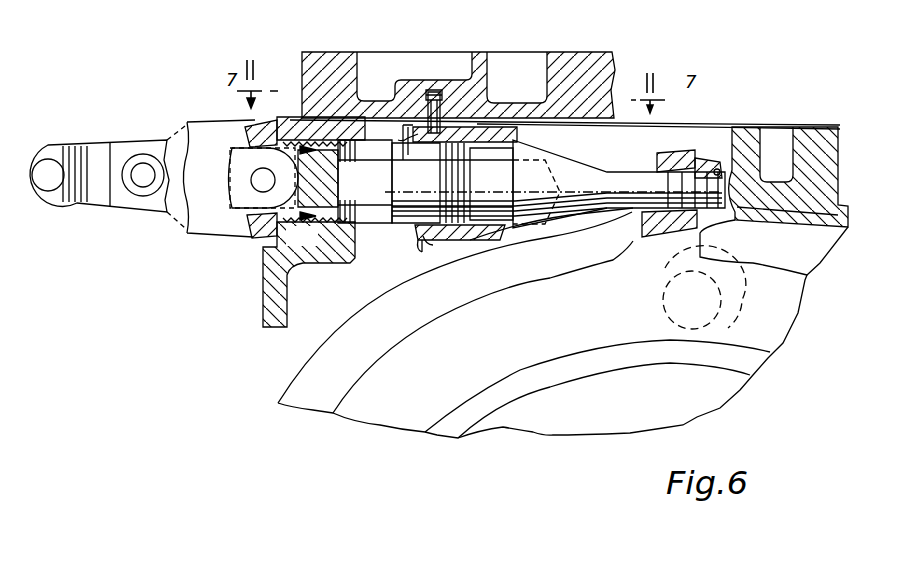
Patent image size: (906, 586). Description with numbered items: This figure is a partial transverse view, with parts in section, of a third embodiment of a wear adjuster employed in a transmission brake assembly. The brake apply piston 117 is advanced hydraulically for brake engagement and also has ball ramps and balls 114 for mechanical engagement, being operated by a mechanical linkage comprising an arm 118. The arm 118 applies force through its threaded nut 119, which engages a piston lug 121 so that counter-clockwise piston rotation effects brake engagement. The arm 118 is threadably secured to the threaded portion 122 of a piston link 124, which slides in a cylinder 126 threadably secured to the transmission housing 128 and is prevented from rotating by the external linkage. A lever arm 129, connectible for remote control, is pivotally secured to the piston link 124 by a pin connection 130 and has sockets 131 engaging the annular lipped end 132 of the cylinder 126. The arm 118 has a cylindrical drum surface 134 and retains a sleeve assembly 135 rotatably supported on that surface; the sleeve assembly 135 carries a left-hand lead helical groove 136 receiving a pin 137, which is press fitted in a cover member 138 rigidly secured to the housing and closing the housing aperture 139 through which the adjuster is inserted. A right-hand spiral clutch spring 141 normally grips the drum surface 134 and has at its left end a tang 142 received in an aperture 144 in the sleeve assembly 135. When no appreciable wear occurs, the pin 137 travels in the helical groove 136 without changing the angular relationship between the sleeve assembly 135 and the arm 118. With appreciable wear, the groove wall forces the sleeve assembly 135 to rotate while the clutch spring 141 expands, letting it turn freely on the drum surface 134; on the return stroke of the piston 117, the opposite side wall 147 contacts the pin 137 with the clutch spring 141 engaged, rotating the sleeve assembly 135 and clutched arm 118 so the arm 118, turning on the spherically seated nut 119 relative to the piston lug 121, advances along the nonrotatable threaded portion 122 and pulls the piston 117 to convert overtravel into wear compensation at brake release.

The balls 114 is at (660, 300).
The brake apply piston 117 is at (775, 263).
The arm 118 is at (606, 172).
The threaded nut 119 is at (712, 160).
The piston lug 121 is at (672, 152).
The threaded portion 122 is at (383, 205).
The piston link 124 is at (330, 262).
The cylinder 126 is at (262, 238).
The transmission housing 128 is at (263, 310).
The lever arm 129 is at (98, 200).
The pin connection 130 is at (288, 220).
The sockets 131 is at (250, 182).
The annular lipped end 132 is at (250, 133).
The cylindrical drum surface 134 is at (513, 153).
The sleeve assembly 135 is at (408, 138).
The helical groove 136 is at (485, 126).
The pin 137 is at (434, 90).
The cover member 138 is at (330, 53).
The housing aperture 139 is at (774, 247).
The spiral clutch spring 141 is at (478, 242).
The tang 142 is at (420, 252).
The aperture 144 is at (425, 245).
The side wall 147 is at (512, 98).